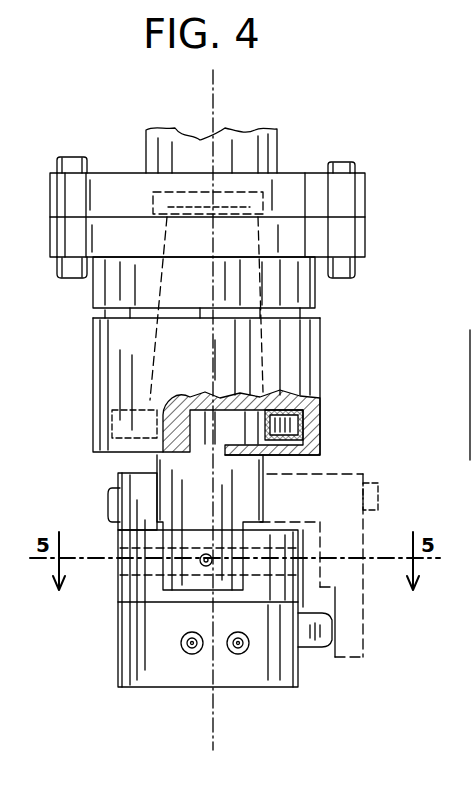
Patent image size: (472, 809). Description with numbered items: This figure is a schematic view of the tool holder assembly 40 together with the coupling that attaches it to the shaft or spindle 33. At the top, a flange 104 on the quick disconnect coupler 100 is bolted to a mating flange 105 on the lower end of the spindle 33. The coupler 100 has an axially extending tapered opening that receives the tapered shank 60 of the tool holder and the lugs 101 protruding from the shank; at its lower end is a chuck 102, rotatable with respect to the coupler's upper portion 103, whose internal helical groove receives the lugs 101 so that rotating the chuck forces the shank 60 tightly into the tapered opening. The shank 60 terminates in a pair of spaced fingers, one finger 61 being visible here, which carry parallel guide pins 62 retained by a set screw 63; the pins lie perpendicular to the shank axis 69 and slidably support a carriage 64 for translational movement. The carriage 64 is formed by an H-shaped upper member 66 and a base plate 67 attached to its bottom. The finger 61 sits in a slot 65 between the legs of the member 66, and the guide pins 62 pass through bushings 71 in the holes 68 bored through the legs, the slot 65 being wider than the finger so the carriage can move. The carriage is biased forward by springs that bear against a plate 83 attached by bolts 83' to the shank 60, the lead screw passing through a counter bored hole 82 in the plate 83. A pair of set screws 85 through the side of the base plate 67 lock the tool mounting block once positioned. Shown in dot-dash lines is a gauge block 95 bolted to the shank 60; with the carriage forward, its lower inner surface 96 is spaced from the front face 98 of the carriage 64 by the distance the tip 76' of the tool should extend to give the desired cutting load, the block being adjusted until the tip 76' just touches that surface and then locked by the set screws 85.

The shaft or spindle 33 is at (268, 150).
The tool holder assembly 40 is at (110, 658).
The tapered shank 60 is at (262, 362).
The finger 61 is at (240, 590).
The guide pin 62 is at (300, 585).
The set screw 63 is at (200, 555).
The carriage 64 is at (313, 672).
The slot 65 is at (262, 505).
The upper member 66 is at (130, 600).
The base plate 67 is at (160, 690).
The hole 68 is at (447, 808).
The shank axis 69 is at (213, 116).
The bushing 71 is at (392, 808).
The tip of the tool 76' is at (352, 628).
The counter bored hole 82 is at (470, 278).
The plate 83 is at (446, 334).
The bolts 83' is at (86, 496).
The set screws 85 is at (234, 653).
The gauge block 95 is at (340, 480).
The lower inner surface 96 is at (362, 585).
The front face 98 is at (300, 578).
The quick disconnect coupler 100 is at (70, 381).
The lugs 101 is at (300, 430).
The chuck 102 is at (305, 372).
The upper portion of the coupler 103 is at (315, 287).
The flange 104 is at (355, 237).
The mating flange 105 is at (355, 187).